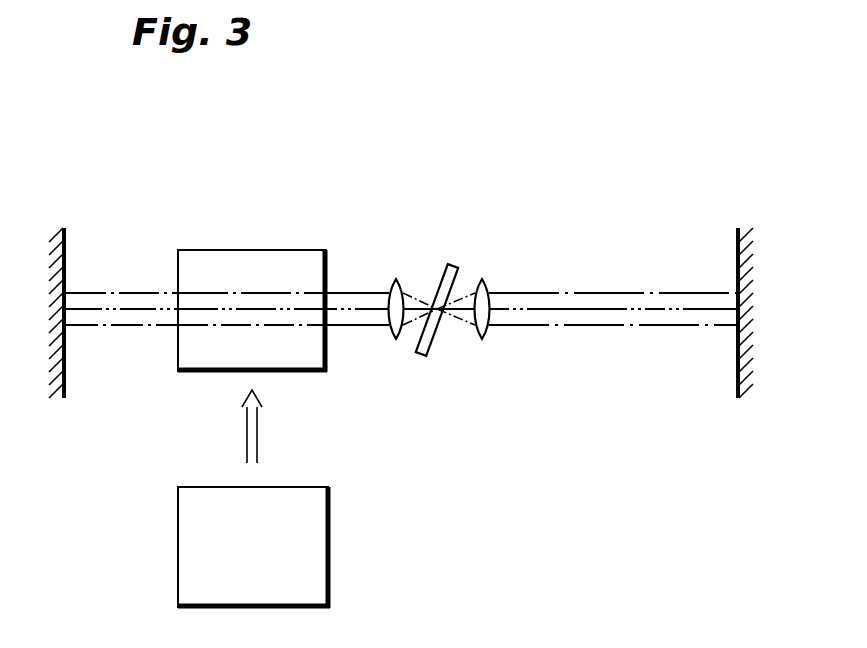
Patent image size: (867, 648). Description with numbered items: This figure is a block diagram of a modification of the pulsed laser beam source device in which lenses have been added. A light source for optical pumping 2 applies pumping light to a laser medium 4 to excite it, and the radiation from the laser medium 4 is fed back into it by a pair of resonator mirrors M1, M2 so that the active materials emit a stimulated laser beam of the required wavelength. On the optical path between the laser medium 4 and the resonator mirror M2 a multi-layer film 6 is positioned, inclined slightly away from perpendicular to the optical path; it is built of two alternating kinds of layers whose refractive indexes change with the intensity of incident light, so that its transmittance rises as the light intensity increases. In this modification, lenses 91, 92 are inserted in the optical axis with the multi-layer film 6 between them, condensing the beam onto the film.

The resonator mirror M1 is at (60, 228).
The resonator mirror M2 is at (741, 228).
The laser medium 4 is at (246, 250).
The light source for optical pumping 2 is at (330, 565).
The lens 91 is at (396, 279).
The lens 92 is at (482, 279).
The multi-layer film 6 is at (446, 265).